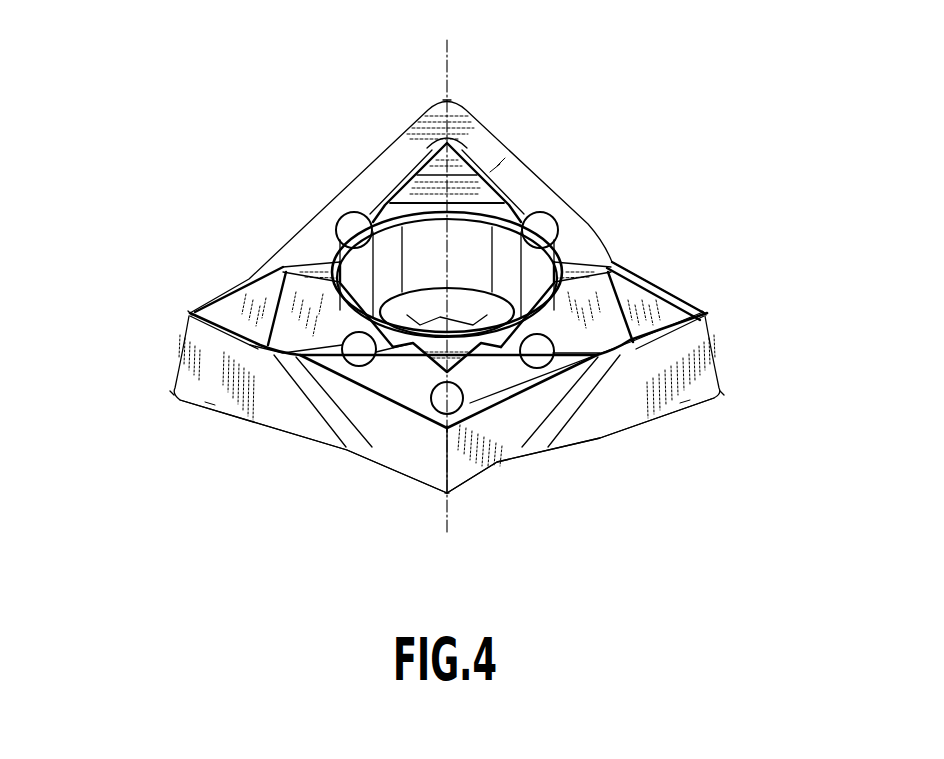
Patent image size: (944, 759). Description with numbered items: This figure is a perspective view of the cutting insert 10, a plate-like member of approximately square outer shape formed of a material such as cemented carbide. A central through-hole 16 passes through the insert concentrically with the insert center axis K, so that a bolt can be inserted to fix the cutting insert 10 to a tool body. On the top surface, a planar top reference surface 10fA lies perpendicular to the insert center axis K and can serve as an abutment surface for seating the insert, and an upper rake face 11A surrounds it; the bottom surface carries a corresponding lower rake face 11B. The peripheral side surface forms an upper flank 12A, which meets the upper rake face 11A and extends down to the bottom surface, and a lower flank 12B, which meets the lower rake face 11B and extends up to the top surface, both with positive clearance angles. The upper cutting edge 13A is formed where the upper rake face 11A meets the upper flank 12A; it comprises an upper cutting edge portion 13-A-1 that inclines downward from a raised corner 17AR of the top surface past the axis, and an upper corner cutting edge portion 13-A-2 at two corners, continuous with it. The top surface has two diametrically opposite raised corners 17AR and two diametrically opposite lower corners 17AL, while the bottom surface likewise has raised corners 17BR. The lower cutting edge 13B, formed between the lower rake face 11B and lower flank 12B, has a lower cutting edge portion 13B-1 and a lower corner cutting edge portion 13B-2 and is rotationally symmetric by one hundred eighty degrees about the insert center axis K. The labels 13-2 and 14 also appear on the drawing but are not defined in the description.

The cutting insert 10 is at (614, 180).
The planar top reference surface 10fA is at (470, 150).
The upper rake face 11A is at (384, 173).
The lower rake face 11B is at (273, 433).
The upper flank 12A is at (378, 382).
The lower flank 12B is at (232, 405).
The upper cutting edge 13A is at (454, 123).
The upper cutting edge portion 13-A-1 is at (418, 118).
The upper corner cutting edge portion 13-A-2 is at (460, 103).
The lower cutting edge 13B is at (452, 430).
The lower cutting edge portion 13B-1 is at (210, 413).
The lower corner cutting edge portion 13B-2 is at (168, 400).
The side surface ridge 13-2 is at (447, 440).
The flank side surface 14 is at (313, 403).
The central through-hole 16 is at (502, 240).
The insert center axis K is at (450, 50).
The raised corners of the top surface 17AR is at (447, 103).
The lower corners of the top surface 17AL is at (190, 313).
The raised corners of the bottom surface 17BR is at (170, 393).